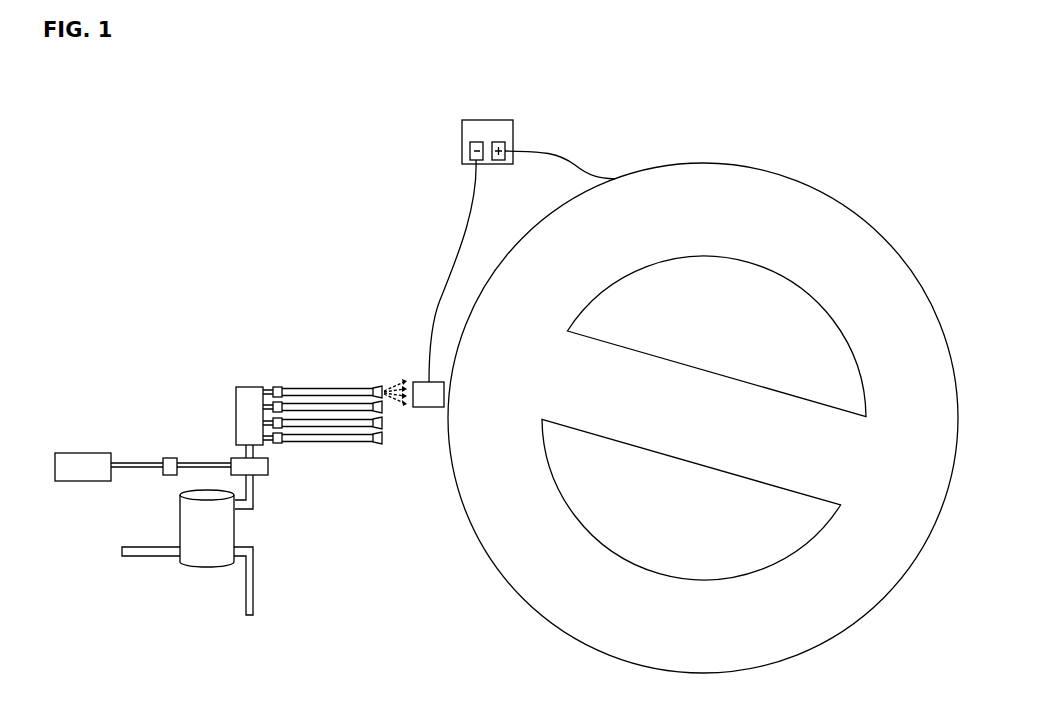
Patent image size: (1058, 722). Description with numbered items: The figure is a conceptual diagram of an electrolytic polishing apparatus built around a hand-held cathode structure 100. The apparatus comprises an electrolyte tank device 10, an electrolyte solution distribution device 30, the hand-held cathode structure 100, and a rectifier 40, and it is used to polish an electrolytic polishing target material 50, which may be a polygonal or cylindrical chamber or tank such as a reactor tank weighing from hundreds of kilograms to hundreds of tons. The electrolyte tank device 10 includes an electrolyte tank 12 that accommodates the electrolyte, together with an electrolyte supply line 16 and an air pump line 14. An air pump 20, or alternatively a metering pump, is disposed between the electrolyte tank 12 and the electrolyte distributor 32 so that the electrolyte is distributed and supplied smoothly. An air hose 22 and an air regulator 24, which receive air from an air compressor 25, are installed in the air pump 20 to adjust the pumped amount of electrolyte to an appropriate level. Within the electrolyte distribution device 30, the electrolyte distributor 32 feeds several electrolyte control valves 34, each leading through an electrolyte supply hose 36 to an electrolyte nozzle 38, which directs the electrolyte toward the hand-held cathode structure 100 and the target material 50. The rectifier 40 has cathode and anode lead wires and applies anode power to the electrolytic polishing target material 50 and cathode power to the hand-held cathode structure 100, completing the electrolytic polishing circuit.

The electrolyte tank device 10 is at (80, 497).
The electrolyte tank 12 is at (180, 508).
The air pump line 14 is at (148, 547).
The electrolyte supply line 16 is at (246, 590).
The air pump 20 is at (268, 467).
The air hose 22 is at (202, 463).
The air regulator 24 is at (170, 458).
The air compressor 25 is at (95, 453).
The electrolyte solution distribution device 30 is at (243, 325).
The electrolyte distributor 32 is at (250, 387).
The electrolyte control valve 34 is at (278, 387).
The electrolyte supply hose 36 is at (327, 389).
The electrolyte nozzle 38 is at (373, 386).
The rectifier 40 is at (487, 120).
The electrolytic polishing target material 50 is at (794, 166).
The hand-held cathode structure 100 is at (414, 366).